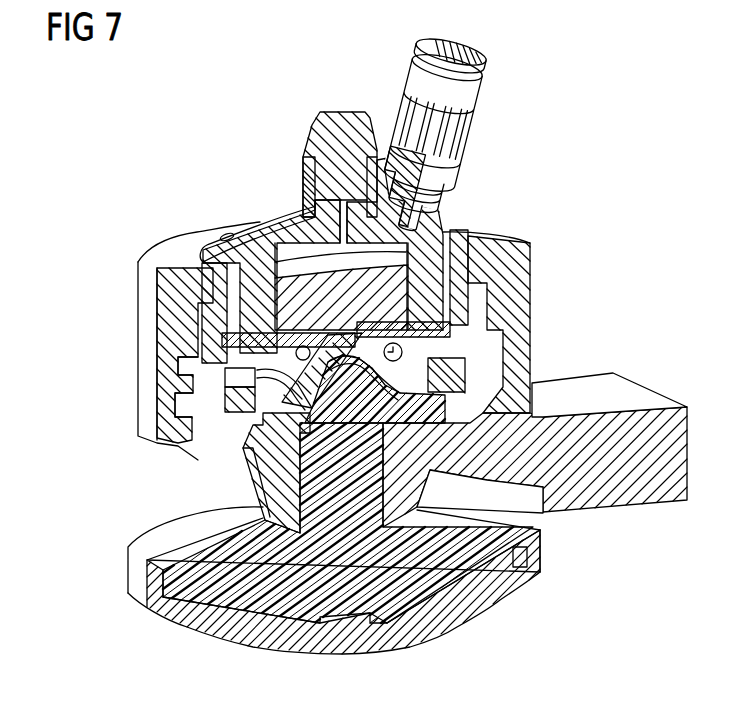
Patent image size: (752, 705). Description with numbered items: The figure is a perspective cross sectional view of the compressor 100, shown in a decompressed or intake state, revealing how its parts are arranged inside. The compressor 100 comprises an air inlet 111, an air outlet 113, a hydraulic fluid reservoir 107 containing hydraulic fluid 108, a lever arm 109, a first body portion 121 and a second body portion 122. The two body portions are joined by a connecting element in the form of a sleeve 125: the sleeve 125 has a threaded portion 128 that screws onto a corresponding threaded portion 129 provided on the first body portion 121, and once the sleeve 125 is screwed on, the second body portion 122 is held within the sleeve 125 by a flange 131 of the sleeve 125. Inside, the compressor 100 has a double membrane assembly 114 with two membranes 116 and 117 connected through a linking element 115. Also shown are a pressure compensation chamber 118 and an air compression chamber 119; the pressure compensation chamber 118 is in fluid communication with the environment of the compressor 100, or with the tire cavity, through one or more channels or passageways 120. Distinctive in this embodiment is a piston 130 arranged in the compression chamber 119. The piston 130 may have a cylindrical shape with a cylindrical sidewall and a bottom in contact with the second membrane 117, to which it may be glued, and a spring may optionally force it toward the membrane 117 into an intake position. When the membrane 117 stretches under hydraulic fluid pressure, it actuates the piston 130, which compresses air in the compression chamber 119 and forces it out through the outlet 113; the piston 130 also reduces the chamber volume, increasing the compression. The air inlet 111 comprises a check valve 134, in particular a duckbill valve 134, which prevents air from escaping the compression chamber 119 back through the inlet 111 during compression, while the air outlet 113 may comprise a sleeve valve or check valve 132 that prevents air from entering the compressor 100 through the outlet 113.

The compressor 100 is at (124, 128).
The hydraulic fluid reservoir 107 is at (493, 597).
The hydraulic fluid 108 is at (423, 578).
The lever arm 109 is at (633, 493).
The air inlet 111 is at (472, 88).
The air outlet 113 is at (345, 288).
The double membrane assembly 114 is at (346, 383).
The linking element 115 is at (337, 339).
The membrane 116 is at (455, 384).
The second membrane 117 is at (432, 327).
The pressure compensation chamber 118 is at (432, 366).
The air compression chamber 119 is at (390, 250).
The channels or passageways 120 is at (390, 341).
The first body portion 121 is at (143, 518).
The second body portion 122 is at (238, 214).
The sleeve 125 is at (128, 306).
The threaded portion 128 is at (182, 423).
The threaded portion 129 is at (208, 440).
The piston 130 is at (312, 158).
The flange 131 is at (193, 290).
The check valve 132 is at (306, 167).
The duckbill valve 134 is at (420, 212).